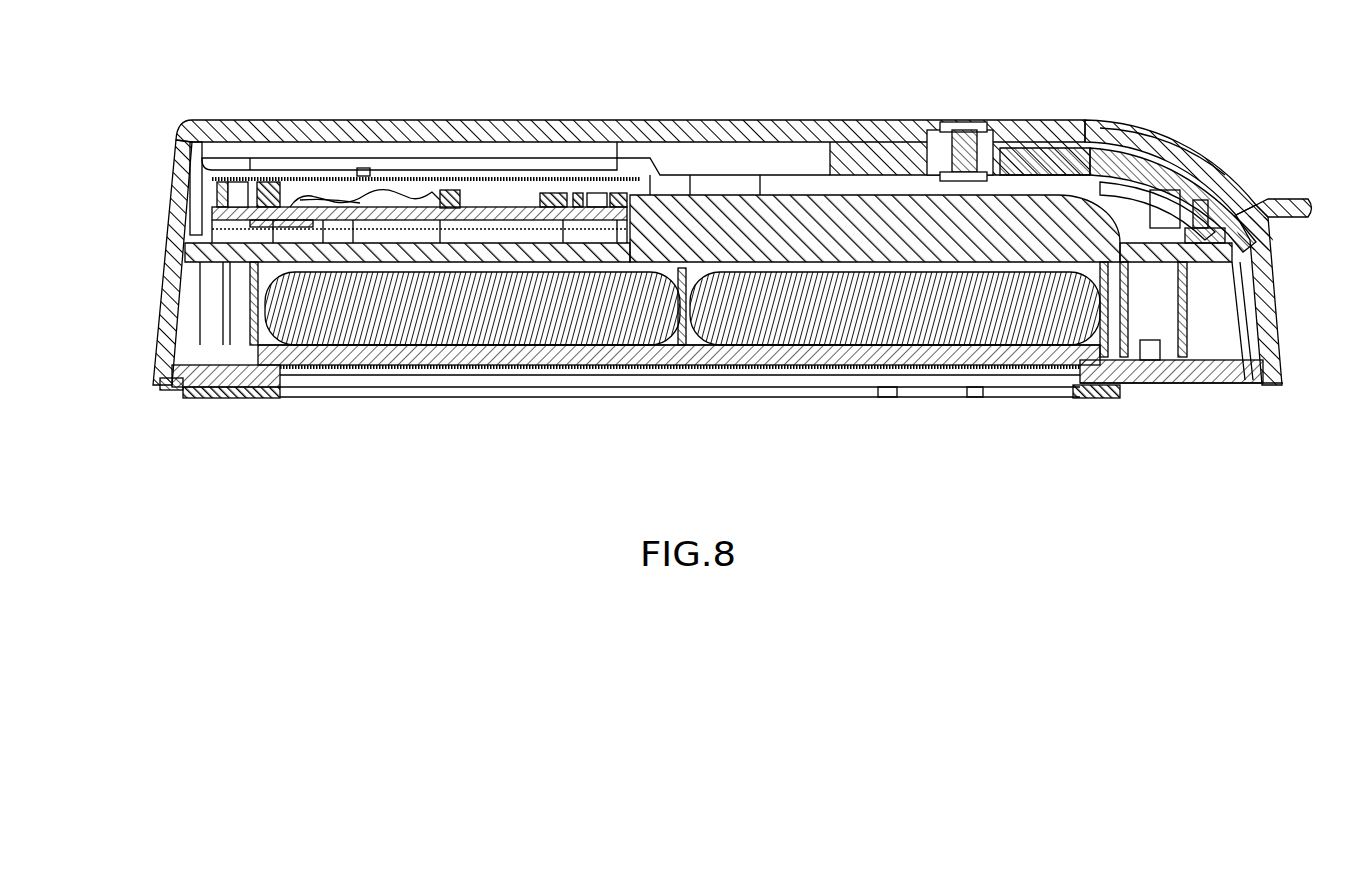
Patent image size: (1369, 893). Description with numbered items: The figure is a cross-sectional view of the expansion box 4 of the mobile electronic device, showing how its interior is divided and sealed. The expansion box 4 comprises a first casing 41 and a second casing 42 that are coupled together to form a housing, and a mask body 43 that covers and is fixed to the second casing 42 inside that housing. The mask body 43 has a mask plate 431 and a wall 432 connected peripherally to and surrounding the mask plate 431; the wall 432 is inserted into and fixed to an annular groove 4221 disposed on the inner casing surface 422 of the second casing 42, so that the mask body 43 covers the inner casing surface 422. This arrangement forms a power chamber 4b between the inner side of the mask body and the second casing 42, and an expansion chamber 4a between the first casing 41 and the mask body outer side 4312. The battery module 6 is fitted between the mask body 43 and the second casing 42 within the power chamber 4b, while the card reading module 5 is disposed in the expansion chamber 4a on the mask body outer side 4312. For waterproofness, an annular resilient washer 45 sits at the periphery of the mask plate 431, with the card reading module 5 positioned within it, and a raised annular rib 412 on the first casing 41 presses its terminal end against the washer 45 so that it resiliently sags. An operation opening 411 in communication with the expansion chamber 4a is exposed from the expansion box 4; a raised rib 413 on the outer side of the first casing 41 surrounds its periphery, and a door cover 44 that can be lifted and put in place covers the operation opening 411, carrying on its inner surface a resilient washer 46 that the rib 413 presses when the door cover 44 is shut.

The expansion box 4 is at (87, 278).
The first casing 41 is at (153, 312).
The second casing 42 is at (684, 392).
The mask body 43 is at (181, 247).
The door cover 44 is at (1193, 138).
The washer 45 is at (1270, 228).
The washer 46 is at (1148, 125).
The operation opening 411 is at (1177, 177).
The rib 412 is at (200, 210).
The rib 413 is at (1092, 150).
The inner casing surface 422 is at (458, 320).
The mask plate 431 is at (490, 247).
The wall 432 is at (212, 398).
The groove 4221 is at (268, 398).
The mask body outer side 4312 is at (398, 243).
The expansion chamber 4a is at (858, 187).
The power chamber 4b is at (905, 268).
The card reading module 5 is at (448, 173).
The battery module 6 is at (739, 345).